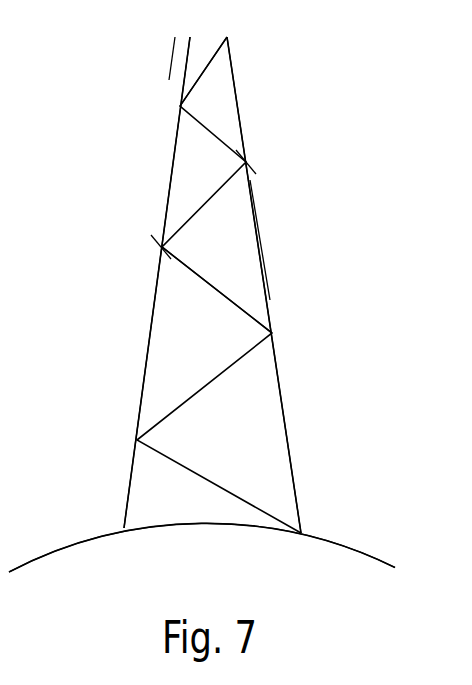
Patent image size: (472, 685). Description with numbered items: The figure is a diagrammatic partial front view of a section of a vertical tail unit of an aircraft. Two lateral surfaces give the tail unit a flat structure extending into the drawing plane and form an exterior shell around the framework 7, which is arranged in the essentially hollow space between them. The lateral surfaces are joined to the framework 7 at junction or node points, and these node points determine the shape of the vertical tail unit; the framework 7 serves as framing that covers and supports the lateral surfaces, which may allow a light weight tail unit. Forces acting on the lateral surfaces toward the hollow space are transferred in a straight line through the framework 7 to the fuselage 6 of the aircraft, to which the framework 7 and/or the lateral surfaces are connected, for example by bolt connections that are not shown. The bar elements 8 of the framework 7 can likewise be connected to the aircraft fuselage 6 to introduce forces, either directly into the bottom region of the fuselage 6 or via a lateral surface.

The aircraft fuselage 6 is at (340, 541).
The framework 7 is at (205, 120).
The bar elements 8 is at (228, 298).